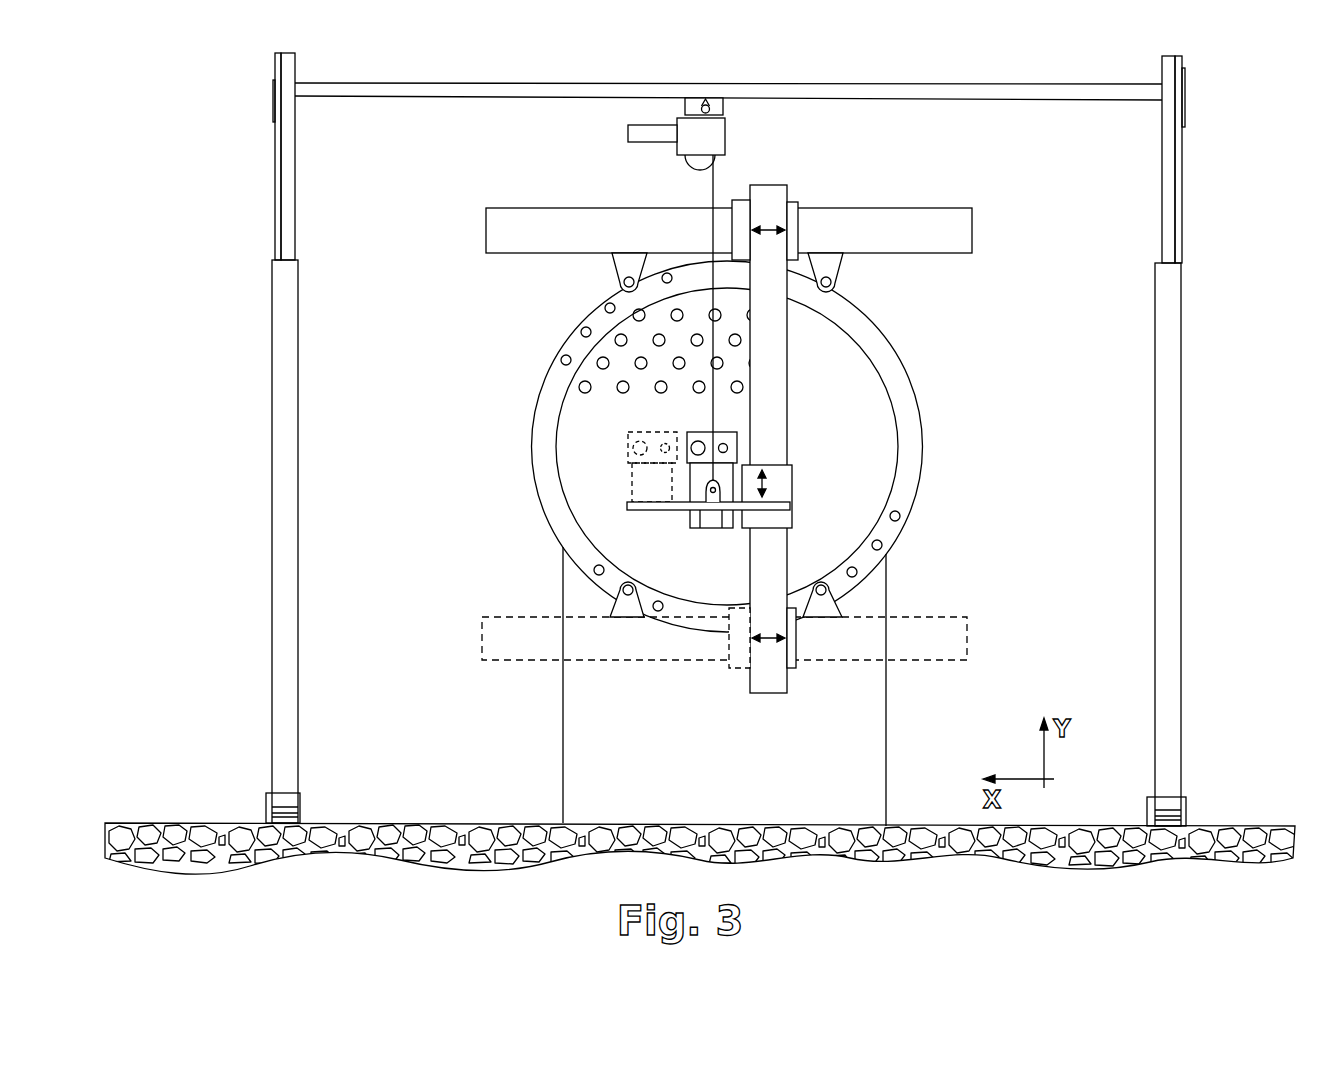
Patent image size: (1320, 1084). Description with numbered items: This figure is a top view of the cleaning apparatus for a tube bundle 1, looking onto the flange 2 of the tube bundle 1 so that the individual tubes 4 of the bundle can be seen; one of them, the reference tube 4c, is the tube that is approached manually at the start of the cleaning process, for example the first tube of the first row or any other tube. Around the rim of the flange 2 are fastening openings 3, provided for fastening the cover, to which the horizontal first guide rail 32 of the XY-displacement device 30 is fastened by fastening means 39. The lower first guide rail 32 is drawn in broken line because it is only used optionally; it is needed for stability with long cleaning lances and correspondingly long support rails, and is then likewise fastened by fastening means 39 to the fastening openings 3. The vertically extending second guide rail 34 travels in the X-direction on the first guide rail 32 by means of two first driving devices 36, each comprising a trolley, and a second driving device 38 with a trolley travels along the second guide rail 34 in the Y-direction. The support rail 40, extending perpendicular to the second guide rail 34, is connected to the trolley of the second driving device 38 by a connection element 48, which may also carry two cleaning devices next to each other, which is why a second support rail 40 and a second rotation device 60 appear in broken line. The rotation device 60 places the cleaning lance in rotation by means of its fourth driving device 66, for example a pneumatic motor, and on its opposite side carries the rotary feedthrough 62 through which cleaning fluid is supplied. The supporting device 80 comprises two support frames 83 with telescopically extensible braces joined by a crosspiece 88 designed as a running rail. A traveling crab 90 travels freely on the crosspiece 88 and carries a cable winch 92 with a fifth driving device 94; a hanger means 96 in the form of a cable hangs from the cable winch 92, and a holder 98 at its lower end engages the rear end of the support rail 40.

The tube bundle 1 is at (729, 543).
The flange 2 is at (902, 372).
The fastening openings 3 is at (561, 358).
The tubes 4 is at (617, 389).
The reference tube 4c is at (633, 315).
The XY-displacement device 30 is at (757, 429).
The first guide rail 32 is at (943, 232).
The second guide rail 34 is at (773, 200).
The first driving devices 36 is at (792, 228).
The second driving device 38 is at (780, 483).
The fastening means 39 is at (627, 263).
The support rail 40 is at (664, 361).
The connection element 48 is at (750, 507).
The rotation device 60 is at (660, 451).
The rotary feedthrough 62 is at (728, 447).
The fourth driving device 66 is at (687, 470).
The supporting device 80 is at (755, 439).
The support frames 83 is at (298, 447).
The crosspiece 88 is at (1002, 103).
The traveling crab 90 is at (685, 105).
The cable winch 92 is at (703, 140).
The fifth driving device 94 is at (653, 135).
The hanger means 96 is at (715, 190).
The holder 98 is at (697, 485).